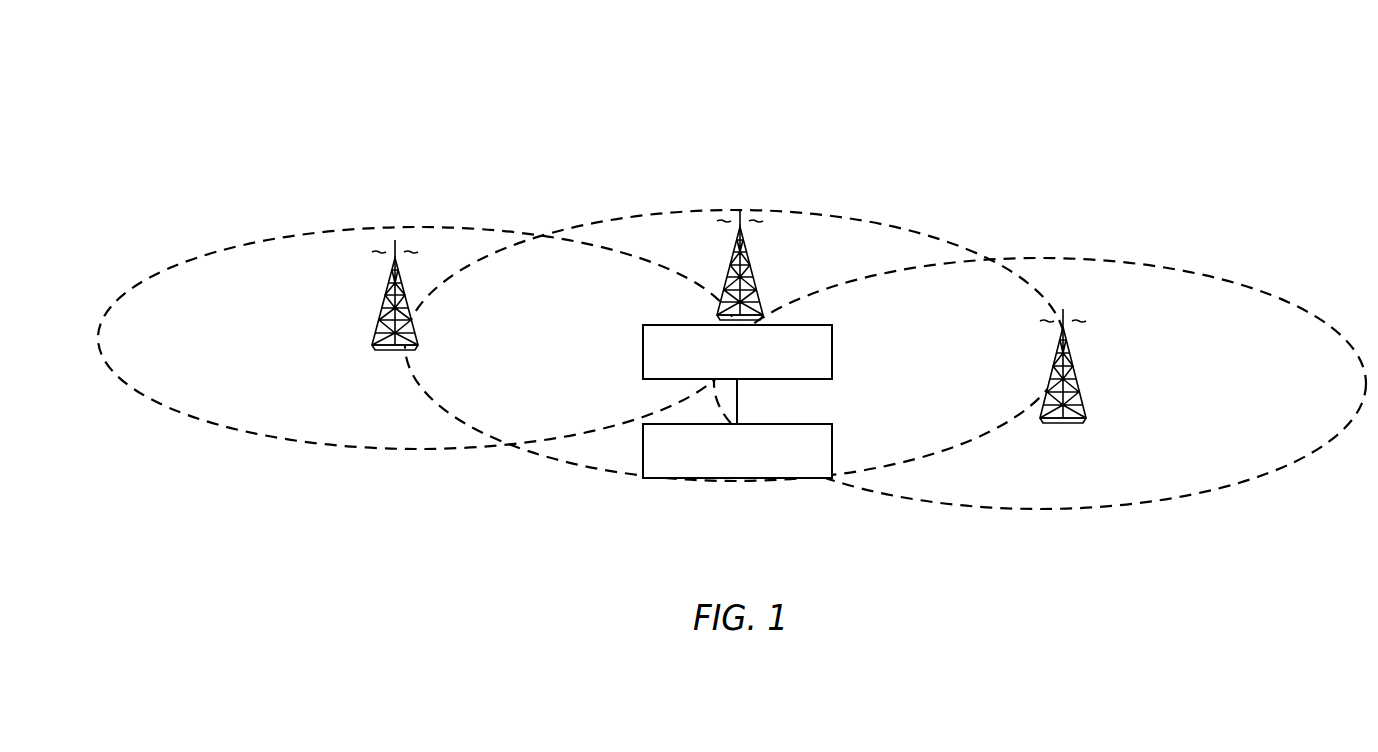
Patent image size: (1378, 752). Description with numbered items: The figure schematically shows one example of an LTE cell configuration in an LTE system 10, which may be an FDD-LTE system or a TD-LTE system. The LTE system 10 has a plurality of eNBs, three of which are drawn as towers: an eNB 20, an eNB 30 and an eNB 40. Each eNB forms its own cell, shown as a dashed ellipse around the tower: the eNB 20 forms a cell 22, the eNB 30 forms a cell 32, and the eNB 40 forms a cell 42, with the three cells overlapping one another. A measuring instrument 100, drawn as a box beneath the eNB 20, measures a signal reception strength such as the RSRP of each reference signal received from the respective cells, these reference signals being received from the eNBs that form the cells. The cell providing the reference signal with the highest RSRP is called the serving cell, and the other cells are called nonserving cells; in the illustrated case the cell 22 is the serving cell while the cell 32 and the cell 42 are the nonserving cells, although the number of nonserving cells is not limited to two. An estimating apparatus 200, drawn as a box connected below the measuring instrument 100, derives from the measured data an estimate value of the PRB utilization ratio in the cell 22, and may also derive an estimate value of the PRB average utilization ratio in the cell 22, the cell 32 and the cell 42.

The LTE system 10 is at (122, 137).
The eNB 20 is at (762, 283).
The cell 22 is at (835, 213).
The eNB 30 is at (378, 308).
The cell 32 is at (431, 227).
The eNB 40 is at (1083, 378).
The cell 42 is at (1218, 281).
The measuring instrument 100 is at (833, 350).
The estimating apparatus 200 is at (833, 450).